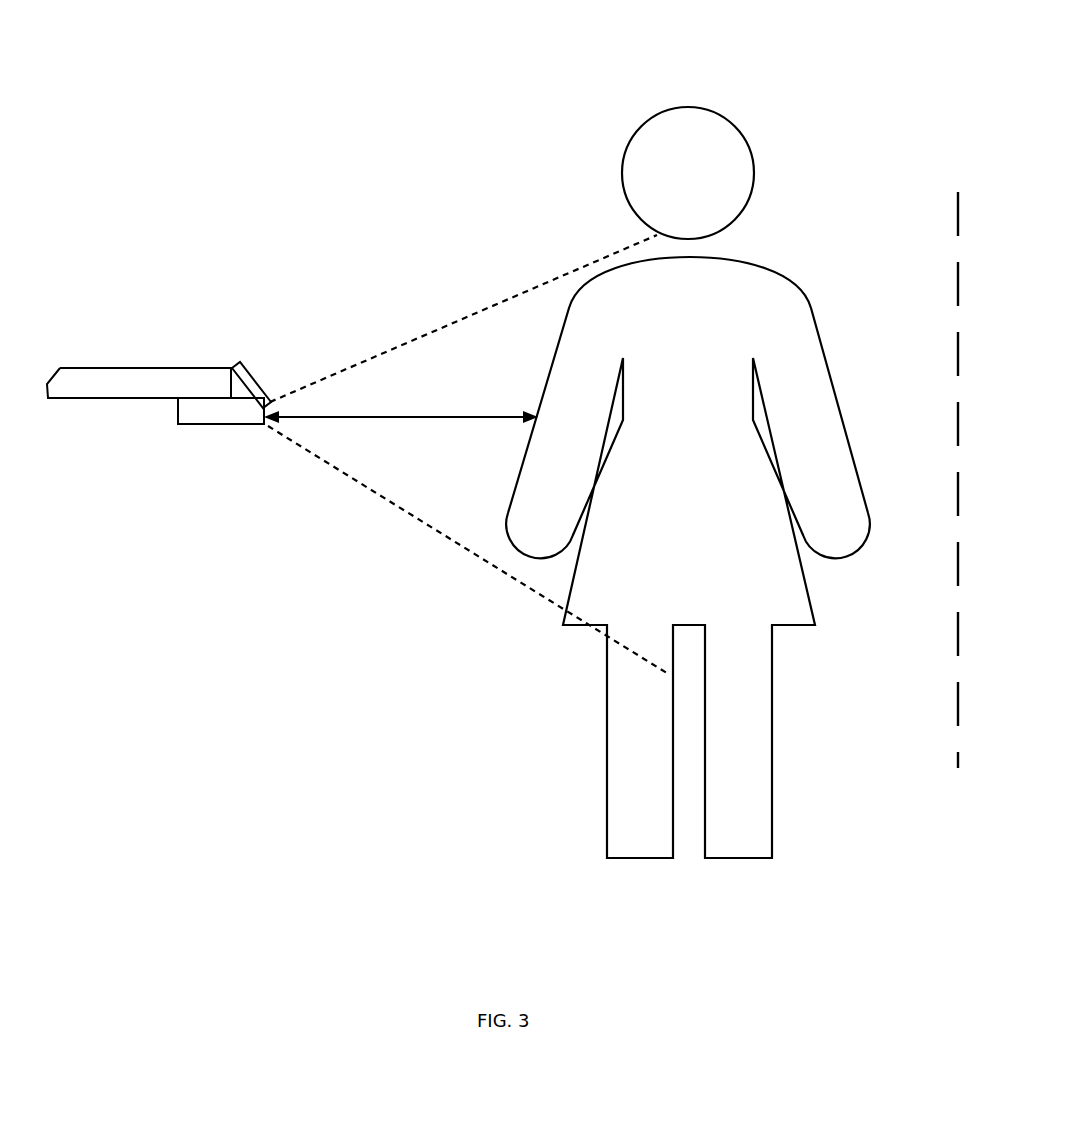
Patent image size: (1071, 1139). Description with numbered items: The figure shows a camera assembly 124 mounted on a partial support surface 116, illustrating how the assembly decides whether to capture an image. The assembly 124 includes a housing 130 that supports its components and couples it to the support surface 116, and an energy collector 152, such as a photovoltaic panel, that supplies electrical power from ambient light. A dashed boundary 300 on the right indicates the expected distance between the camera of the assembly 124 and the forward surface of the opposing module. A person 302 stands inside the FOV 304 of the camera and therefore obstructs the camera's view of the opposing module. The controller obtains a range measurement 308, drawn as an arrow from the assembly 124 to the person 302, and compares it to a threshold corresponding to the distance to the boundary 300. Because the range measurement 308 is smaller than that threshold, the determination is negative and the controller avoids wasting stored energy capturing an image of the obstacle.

The support surface 116 is at (168, 368).
The camera assembly 124 is at (176, 434).
The housing 130 is at (222, 427).
The energy collector 152 is at (249, 373).
The boundary 300 is at (937, 480).
The person 302 is at (683, 107).
The FOV 304 is at (448, 542).
The range measurement 308 is at (401, 404).